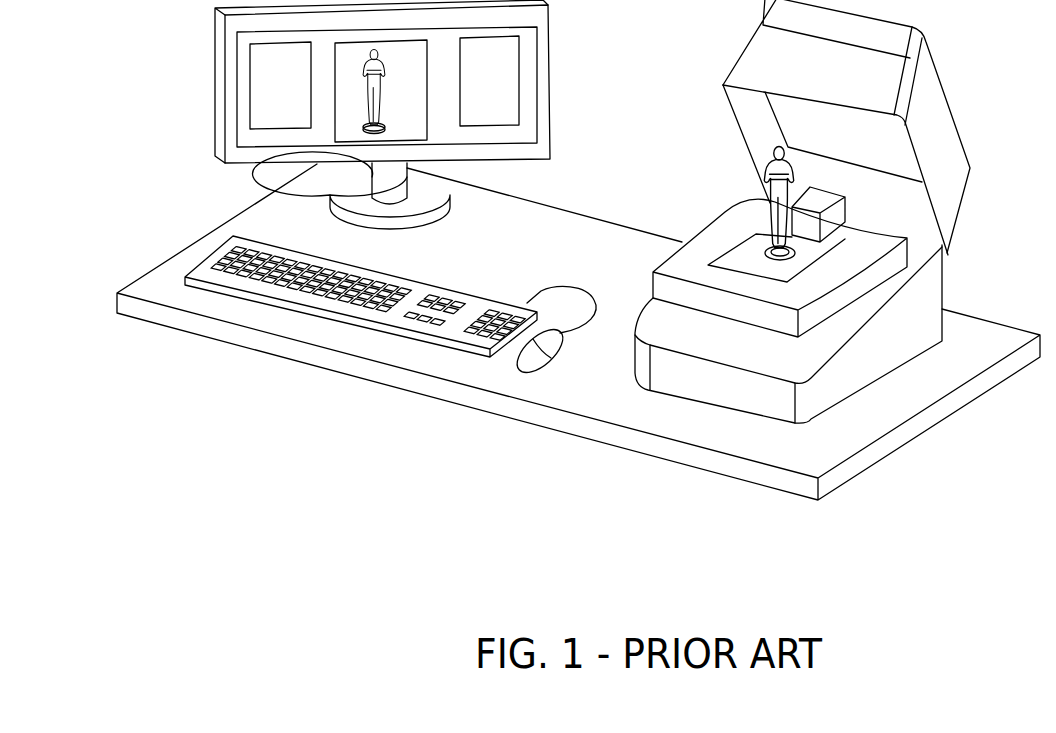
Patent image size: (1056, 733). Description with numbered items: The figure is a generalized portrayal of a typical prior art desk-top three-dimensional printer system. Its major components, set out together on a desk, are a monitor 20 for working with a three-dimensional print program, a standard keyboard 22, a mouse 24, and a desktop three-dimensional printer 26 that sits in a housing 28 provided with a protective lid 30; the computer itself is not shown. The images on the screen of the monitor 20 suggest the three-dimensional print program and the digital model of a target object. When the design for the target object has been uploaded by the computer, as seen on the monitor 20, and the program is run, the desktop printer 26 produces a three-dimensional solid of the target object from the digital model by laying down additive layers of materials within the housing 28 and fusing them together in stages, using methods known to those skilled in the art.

The monitor 20 is at (550, 65).
The standard keyboard 22 is at (307, 313).
The mouse 24 is at (518, 370).
The desktop 3D printer 26 is at (696, 192).
The housing 28 is at (947, 281).
The protective lid 30 is at (945, 90).